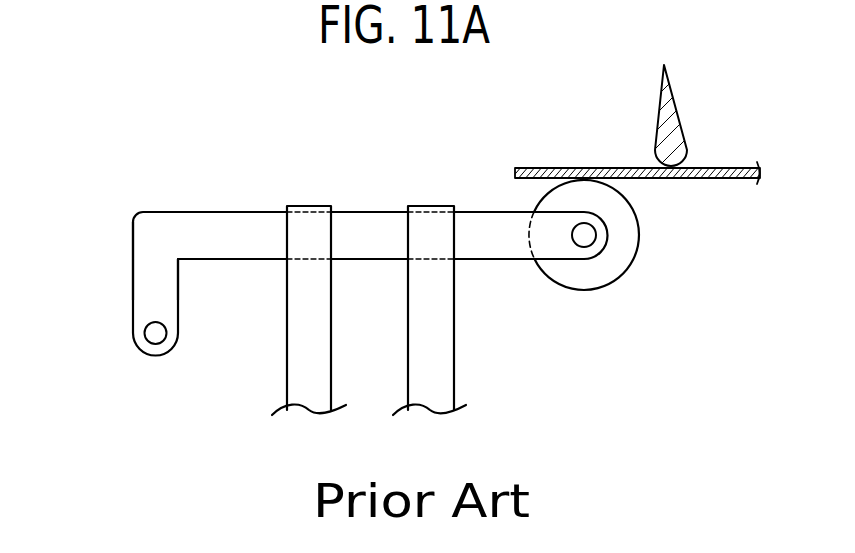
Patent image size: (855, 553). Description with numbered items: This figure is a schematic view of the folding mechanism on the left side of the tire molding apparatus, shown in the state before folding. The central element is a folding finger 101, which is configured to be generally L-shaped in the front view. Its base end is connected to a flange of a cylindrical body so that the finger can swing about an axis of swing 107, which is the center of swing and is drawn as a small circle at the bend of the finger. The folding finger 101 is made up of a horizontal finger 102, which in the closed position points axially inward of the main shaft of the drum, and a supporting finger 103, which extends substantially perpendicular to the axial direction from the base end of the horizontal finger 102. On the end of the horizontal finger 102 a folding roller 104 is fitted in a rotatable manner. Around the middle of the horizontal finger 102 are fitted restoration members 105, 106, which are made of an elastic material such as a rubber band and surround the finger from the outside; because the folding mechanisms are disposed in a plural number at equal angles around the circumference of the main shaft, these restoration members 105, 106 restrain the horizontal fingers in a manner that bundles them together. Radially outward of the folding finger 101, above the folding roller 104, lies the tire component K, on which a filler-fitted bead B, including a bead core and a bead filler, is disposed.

The folding finger 101 is at (374, 205).
The horizontal finger 102 is at (484, 224).
The supporting finger 103 is at (143, 250).
The folding roller 104 is at (588, 278).
The restoration member 105 is at (440, 360).
The restoration member 106 is at (319, 362).
The axis of swing 107 is at (153, 334).
The tire component K is at (548, 167).
The filler-fitted bead B is at (692, 120).